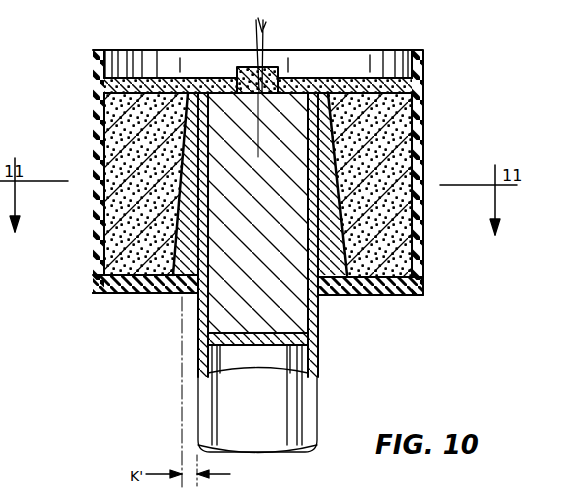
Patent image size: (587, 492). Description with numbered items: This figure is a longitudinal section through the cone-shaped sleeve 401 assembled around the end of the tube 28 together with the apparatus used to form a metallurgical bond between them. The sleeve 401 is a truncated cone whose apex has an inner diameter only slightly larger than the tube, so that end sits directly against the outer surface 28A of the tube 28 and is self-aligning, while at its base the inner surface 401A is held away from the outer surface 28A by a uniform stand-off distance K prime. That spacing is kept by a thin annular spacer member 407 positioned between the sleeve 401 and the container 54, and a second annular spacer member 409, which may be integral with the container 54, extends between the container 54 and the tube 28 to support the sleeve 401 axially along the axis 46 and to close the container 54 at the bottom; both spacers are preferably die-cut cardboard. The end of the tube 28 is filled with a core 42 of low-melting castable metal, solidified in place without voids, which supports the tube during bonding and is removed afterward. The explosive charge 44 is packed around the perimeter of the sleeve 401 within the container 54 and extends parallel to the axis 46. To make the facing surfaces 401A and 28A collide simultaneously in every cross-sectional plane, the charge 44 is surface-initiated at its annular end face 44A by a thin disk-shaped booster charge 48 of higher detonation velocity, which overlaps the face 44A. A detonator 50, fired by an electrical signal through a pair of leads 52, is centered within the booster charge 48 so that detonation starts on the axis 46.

The tube 28 is at (318, 405).
The outer surface of tube 28A is at (193, 258).
The core 42 is at (300, 245).
The explosive charge 44 is at (140, 256).
The annular end face of explosive charge 44A is at (118, 104).
The axis 46 is at (253, 118).
The booster charge 48 is at (200, 82).
The detonator 50 is at (279, 72).
The leads 52 is at (285, 37).
The container 54 is at (423, 118).
The sleeve 401 is at (335, 150).
The inner surface of sleeve 401A is at (190, 212).
The spacer member 407 is at (380, 284).
The spacer member 409 is at (136, 288).